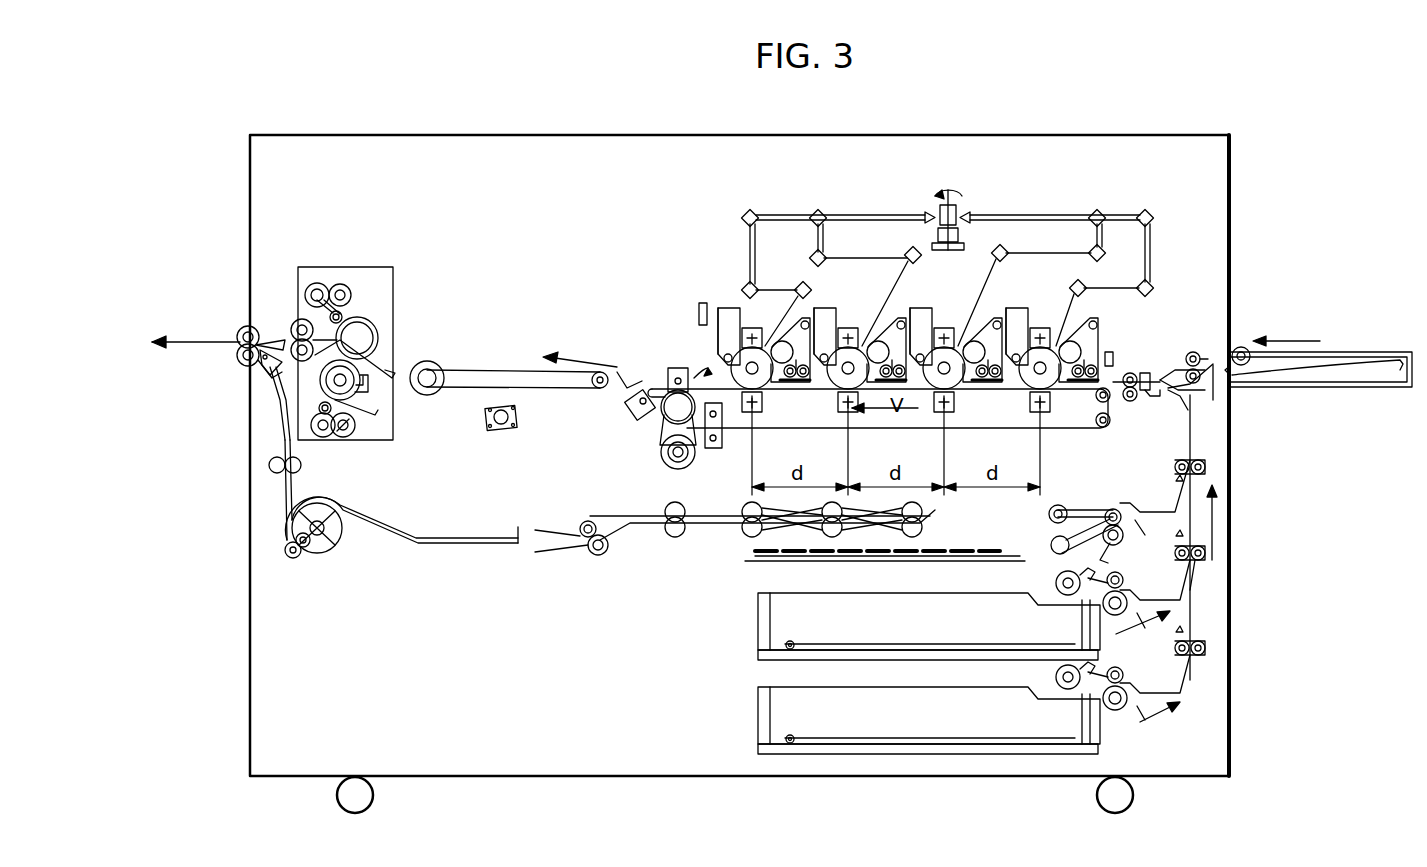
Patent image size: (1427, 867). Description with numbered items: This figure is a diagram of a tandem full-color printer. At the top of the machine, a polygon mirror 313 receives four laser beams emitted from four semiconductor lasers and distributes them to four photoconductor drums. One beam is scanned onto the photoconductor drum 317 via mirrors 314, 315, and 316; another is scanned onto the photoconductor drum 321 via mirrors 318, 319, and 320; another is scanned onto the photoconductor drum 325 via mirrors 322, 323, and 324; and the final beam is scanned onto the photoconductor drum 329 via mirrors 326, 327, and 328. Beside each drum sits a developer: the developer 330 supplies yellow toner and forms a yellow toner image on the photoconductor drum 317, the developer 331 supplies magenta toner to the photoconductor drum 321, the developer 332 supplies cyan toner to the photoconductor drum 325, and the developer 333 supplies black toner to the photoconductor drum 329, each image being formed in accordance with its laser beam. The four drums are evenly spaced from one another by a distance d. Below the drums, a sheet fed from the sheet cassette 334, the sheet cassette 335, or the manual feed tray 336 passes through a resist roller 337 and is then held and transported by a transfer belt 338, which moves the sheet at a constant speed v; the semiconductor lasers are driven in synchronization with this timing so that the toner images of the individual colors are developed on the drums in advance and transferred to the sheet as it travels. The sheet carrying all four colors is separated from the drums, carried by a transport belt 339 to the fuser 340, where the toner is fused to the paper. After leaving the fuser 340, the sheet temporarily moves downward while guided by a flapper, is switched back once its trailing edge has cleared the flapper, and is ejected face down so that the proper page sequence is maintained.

The polygon mirror 313 is at (935, 215).
The mirror 314 is at (1151, 222).
The mirror 315 is at (1150, 292).
The mirror 316 is at (1083, 292).
The photoconductor drum 317 is at (1023, 383).
The mirror 318 is at (1102, 212).
The mirror 319 is at (1092, 248).
The mirror 320 is at (1006, 256).
The photoconductor drum 321 is at (925, 383).
The mirror 322 is at (815, 210).
The mirror 323 is at (825, 265).
The mirror 324 is at (916, 261).
The photoconductor drum 325 is at (830, 383).
The mirror 326 is at (745, 222).
The mirror 327 is at (745, 286).
The mirror 328 is at (798, 282).
The photoconductor drum 329 is at (733, 384).
The developer 330 is at (1088, 383).
The developer 331 is at (988, 383).
The developer 332 is at (888, 383).
The developer 333 is at (793, 383).
The sheet cassette 334 is at (756, 622).
The sheet cassette 335 is at (756, 719).
The manual feed tray 336 is at (1272, 388).
The resist roller 337 is at (1150, 353).
The transfer belt 338 is at (1110, 413).
The transport belt 339 is at (488, 365).
The fuser 340 is at (395, 285).